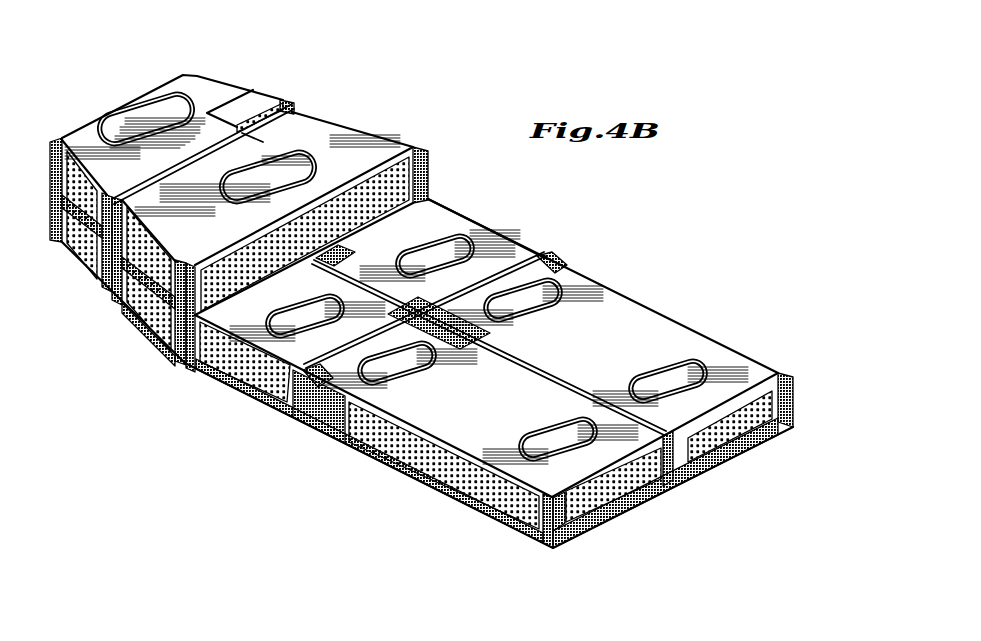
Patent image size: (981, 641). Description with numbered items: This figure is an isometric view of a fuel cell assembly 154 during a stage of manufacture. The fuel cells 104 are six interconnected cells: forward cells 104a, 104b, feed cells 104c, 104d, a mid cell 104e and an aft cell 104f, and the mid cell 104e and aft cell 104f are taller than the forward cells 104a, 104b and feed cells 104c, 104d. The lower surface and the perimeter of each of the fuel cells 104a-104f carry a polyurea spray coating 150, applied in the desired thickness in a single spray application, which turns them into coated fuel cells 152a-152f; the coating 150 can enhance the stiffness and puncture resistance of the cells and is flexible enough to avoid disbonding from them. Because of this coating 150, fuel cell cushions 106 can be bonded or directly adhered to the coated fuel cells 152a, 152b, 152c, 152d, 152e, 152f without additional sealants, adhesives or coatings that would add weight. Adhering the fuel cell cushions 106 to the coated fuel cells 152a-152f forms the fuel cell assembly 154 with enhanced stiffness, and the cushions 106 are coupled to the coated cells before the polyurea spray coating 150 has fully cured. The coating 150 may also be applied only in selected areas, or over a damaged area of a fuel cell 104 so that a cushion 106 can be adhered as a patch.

The fuel cells 104 is at (618, 520).
The forward cell 104a is at (423, 466).
The forward cell 104b is at (628, 322).
The feed cell 104c is at (233, 373).
The feed cell 104d is at (447, 227).
The mid cell 104e is at (320, 140).
The aft cell 104f is at (202, 95).
The fuel cell cushions 106 is at (321, 428).
The polyurea spray coating 150 is at (152, 318).
The coated fuel cell 152a is at (484, 497).
The coated fuel cell 152b is at (688, 345).
The coated fuel cell 152c is at (270, 390).
The coated fuel cell 152d is at (498, 250).
The coated fuel cell 152e is at (380, 150).
The coated fuel cell 152f is at (258, 100).
The fuel cell assembly 154 is at (592, 199).